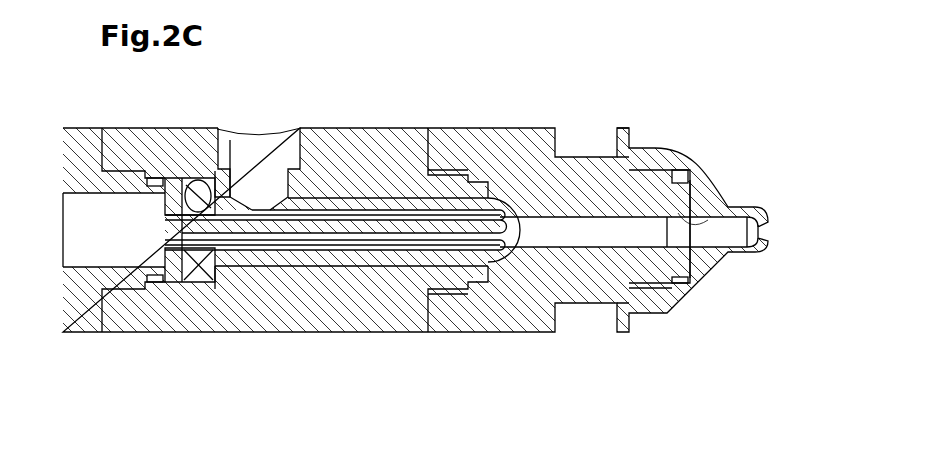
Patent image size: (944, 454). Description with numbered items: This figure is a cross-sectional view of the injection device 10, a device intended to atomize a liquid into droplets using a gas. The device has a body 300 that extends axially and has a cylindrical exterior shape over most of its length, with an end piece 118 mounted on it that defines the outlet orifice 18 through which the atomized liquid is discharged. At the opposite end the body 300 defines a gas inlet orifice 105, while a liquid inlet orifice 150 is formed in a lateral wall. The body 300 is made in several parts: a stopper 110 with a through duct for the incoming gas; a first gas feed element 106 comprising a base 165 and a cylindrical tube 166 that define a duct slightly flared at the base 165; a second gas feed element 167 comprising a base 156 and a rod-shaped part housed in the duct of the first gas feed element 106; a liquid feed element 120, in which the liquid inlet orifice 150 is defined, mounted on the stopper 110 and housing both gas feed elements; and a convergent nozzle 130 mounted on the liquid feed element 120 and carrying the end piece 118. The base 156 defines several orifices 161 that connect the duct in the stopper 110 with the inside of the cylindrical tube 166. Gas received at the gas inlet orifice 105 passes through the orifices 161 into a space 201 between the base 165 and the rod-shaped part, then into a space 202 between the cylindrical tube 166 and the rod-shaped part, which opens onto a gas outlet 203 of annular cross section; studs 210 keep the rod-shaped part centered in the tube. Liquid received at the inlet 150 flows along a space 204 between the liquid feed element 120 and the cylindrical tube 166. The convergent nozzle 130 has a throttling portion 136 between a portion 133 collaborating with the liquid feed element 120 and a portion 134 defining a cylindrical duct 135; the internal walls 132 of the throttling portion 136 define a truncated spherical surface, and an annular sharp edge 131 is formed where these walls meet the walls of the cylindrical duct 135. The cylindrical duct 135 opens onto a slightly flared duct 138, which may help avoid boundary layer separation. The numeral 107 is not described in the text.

The injection device 10 is at (619, 92).
The outlet orifice 18 is at (779, 227).
The gas inlet orifice 105 is at (55, 248).
The first gas feed element 106 is at (190, 128).
The needle guide 107 is at (262, 255).
The stopper 110 is at (90, 128).
The end piece 118 is at (654, 147).
The liquid feed element 120 is at (366, 128).
The convergent nozzle 130 is at (497, 190).
The annular sharp edge 131 is at (520, 256).
The internal walls of the throttling portion 132 is at (538, 198).
The portion collaborating with the liquid feed element 133 is at (455, 300).
The portion defining the cylindrical duct 134 is at (605, 285).
The cylindrical duct 135 is at (585, 230).
The throttling portion 136 is at (490, 290).
The flared duct 138 is at (702, 194).
The liquid inlet orifice 150 is at (257, 113).
The base of the second gas feed element 156 is at (140, 128).
The orifices 161 is at (162, 242).
The base of the first gas feed element 165 is at (183, 333).
The cylindrical tube 166 is at (330, 255).
The second gas feed element 167 is at (230, 128).
The space 201 is at (162, 234).
The space 202 is at (288, 255).
The gas outlet 203 is at (515, 200).
The space 204 is at (403, 300).
The studs 210 is at (443, 195).
The body 300 is at (360, 255).